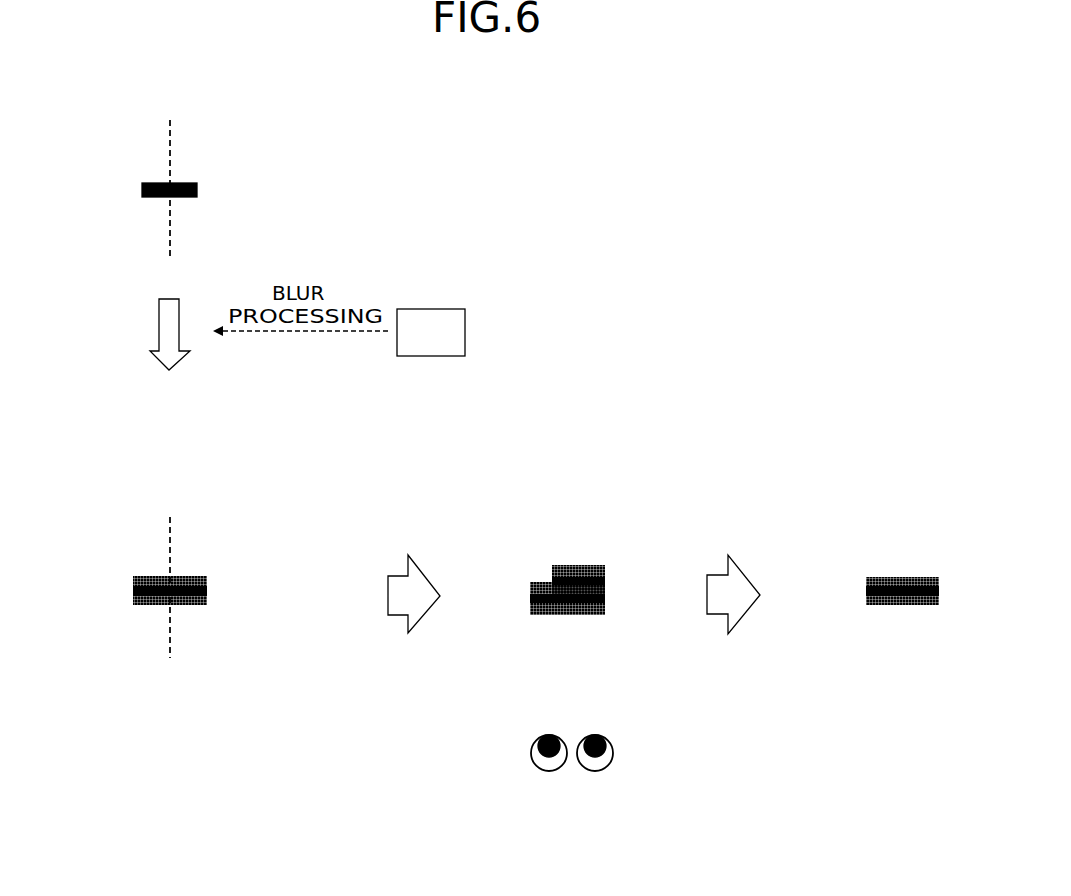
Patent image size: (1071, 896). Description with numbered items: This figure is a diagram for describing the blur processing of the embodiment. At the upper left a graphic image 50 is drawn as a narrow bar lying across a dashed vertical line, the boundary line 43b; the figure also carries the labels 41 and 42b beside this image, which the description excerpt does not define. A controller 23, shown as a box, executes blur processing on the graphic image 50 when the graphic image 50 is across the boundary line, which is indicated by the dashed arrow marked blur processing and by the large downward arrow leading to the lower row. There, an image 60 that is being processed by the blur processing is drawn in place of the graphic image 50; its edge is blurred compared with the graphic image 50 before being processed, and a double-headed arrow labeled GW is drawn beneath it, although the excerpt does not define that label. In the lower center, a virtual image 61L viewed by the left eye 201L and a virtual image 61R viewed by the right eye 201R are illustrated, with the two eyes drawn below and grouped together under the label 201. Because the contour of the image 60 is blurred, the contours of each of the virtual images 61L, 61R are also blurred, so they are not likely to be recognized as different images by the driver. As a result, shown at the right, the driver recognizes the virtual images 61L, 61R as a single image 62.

The display image 41 is at (100, 168).
The center line (reference line 43) 43b is at (170, 118).
The image region (42) 42b is at (232, 168).
The graphic image 50 is at (153, 183).
The controller 23 is at (430, 309).
The image being processed by blur processing 60 is at (153, 580).
The virtual image viewed by the left eye 61L is at (543, 583).
The virtual image viewed by the right eye 61R is at (563, 578).
The single image 62 is at (900, 582).
The left eye 201L is at (550, 771).
The right eye 201R is at (615, 789).
The eyes of observer 201 is at (589, 811).
The gradation width GW is at (232, 853).